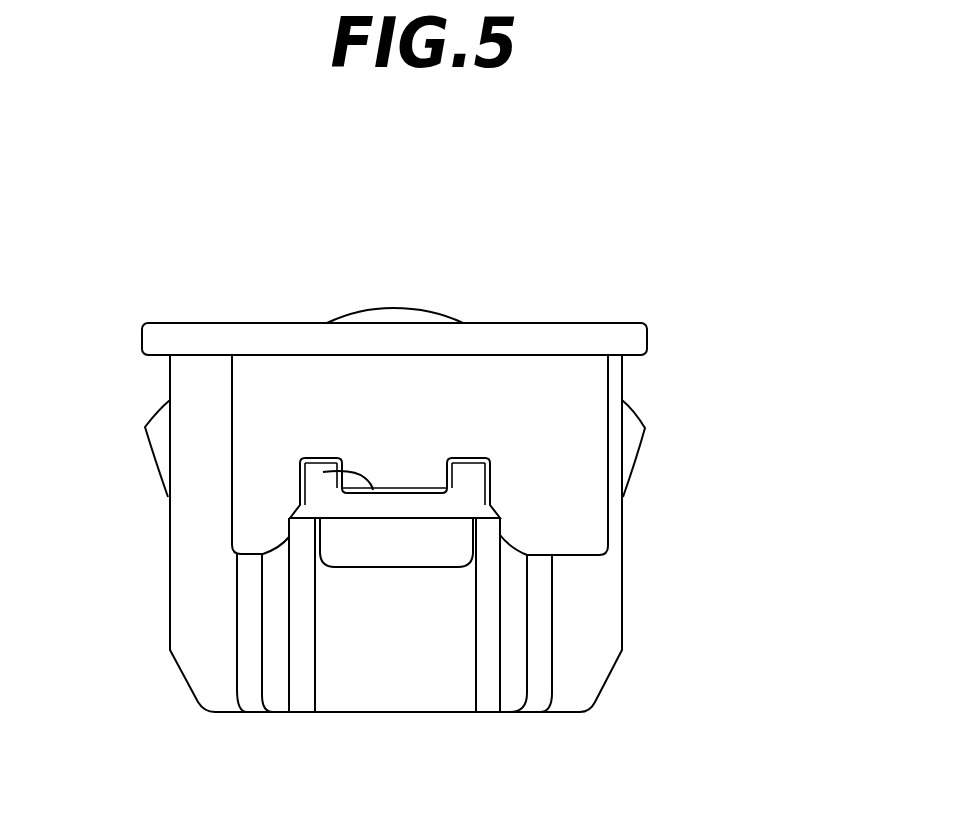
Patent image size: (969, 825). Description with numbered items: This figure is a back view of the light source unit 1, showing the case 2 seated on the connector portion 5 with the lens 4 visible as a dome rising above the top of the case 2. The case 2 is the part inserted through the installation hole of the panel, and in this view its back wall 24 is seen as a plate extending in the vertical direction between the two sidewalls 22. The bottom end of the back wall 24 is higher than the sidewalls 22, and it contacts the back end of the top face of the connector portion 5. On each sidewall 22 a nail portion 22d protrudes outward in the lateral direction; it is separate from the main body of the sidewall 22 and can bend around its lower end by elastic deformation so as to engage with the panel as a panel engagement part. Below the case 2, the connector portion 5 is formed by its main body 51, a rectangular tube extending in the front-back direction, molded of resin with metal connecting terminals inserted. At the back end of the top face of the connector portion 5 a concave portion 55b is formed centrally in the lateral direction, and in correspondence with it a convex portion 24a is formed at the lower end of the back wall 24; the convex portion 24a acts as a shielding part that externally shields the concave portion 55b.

The light source unit 1 is at (147, 187).
The case 2 is at (187, 340).
The lens 4 is at (403, 310).
The back wall 24 is at (263, 377).
The convex portion 24a is at (420, 477).
The sidewalls 22 is at (185, 616).
The nail portion 22d is at (147, 432).
The connector portion 5 is at (343, 685).
The main body 51 is at (440, 685).
The concave portion 55b is at (323, 472).